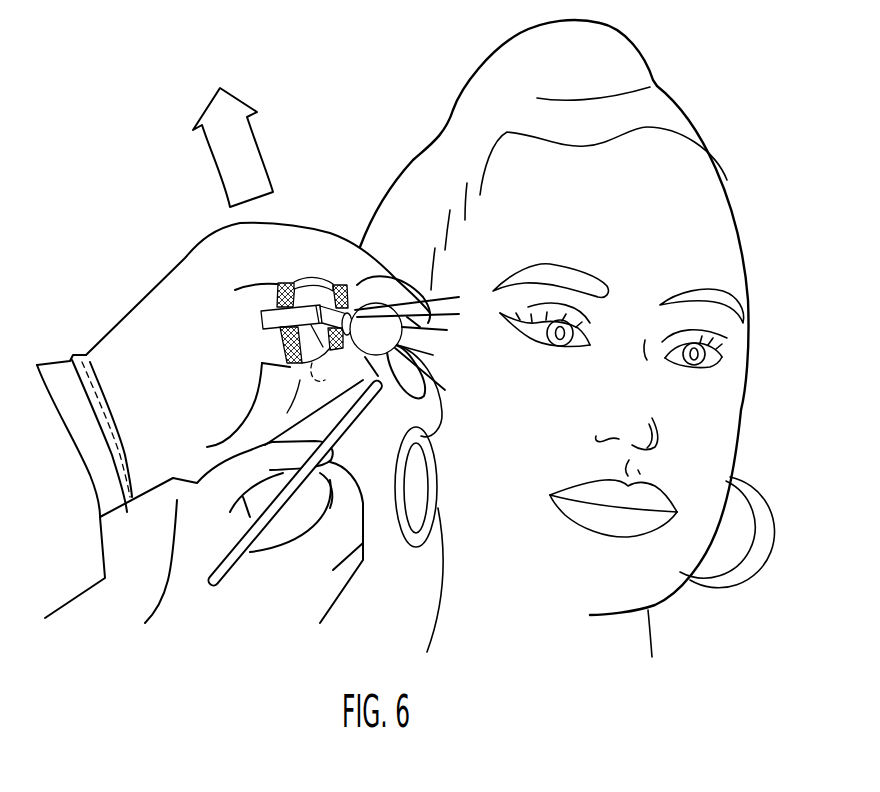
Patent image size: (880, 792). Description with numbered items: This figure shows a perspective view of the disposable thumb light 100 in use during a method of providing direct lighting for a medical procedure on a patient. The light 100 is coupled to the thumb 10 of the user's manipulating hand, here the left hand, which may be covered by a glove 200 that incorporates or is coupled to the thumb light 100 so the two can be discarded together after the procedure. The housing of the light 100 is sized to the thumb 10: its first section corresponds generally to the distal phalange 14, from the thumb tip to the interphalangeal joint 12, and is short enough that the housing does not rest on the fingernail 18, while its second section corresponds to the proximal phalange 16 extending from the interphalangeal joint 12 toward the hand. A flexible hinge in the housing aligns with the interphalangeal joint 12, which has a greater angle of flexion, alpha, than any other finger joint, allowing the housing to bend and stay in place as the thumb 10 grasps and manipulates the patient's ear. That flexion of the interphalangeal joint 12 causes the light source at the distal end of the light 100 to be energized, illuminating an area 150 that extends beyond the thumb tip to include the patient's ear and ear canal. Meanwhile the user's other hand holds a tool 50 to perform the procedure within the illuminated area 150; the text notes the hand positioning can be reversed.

The thumb 10 is at (300, 382).
The interphalangeal joint 12 is at (329, 283).
The distal phalange 14 is at (356, 313).
The proximal phalange 16 is at (263, 293).
The fingernail 18 is at (389, 345).
The tool 50 is at (247, 557).
The disposable thumb light 100 is at (263, 325).
The illuminated area 150 is at (437, 364).
The glove 200 is at (128, 353).